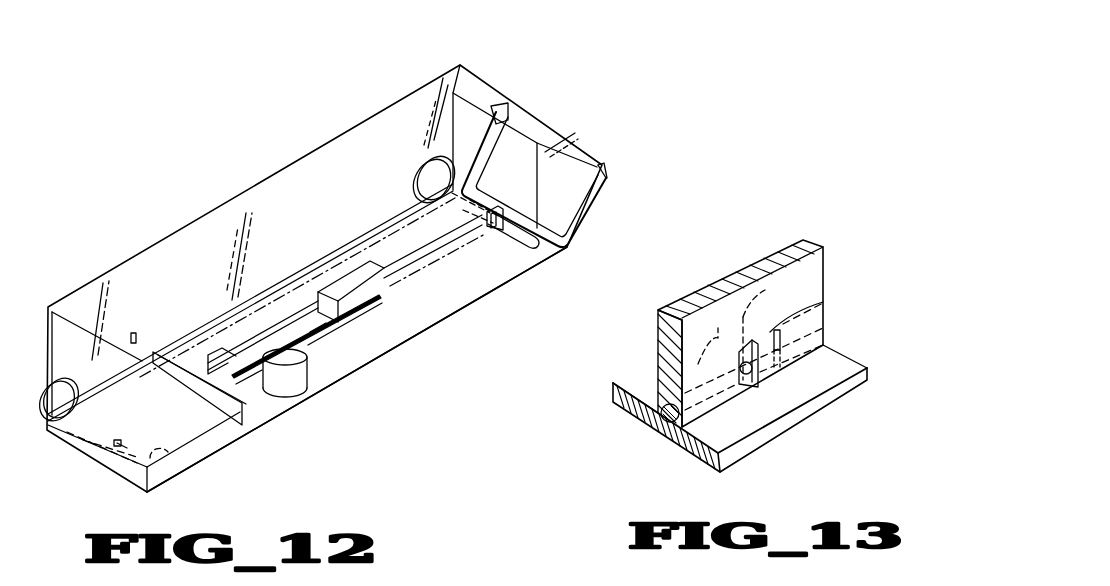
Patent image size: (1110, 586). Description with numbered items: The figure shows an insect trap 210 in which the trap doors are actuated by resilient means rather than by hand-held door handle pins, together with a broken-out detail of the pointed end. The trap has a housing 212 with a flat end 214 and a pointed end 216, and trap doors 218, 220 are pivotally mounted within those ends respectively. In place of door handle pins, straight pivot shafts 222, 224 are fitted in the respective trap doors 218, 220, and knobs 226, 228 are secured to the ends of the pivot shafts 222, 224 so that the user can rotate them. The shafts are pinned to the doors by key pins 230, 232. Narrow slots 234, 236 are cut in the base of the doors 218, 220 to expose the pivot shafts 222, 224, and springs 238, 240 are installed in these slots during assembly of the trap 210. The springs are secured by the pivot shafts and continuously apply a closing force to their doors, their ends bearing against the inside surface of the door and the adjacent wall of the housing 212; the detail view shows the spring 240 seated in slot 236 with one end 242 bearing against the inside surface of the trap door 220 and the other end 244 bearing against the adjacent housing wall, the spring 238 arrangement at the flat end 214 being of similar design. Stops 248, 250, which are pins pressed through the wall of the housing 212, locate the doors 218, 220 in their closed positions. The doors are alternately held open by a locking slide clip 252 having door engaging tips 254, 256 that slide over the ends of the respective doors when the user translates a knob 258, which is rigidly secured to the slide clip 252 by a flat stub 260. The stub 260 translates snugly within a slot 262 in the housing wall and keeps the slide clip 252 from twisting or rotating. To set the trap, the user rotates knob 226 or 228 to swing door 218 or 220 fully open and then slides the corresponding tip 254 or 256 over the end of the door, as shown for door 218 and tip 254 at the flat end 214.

In FIG. 12, the insect trap 210 is at (282, 167).
In FIG. 12, the housing 212 is at (238, 192).
In FIG. 13, the housing 212 is at (697, 460).
In FIG. 12, the flat end 214 is at (53, 298).
In FIG. 12, the pointed end 216 is at (593, 140).
In FIG. 12, the trap door 218 is at (210, 437).
In FIG. 12, the trap door 220 is at (520, 140).
In FIG. 13, the trap door 220 is at (822, 267).
In FIG. 12, the pivot shaft 222 is at (190, 457).
In FIG. 12, the pivot shaft 224 is at (520, 237).
In FIG. 13, the pivot shaft 224 is at (666, 406).
In FIG. 12, the knob 226 is at (62, 380).
In FIG. 12, the knob 228 is at (428, 172).
In FIG. 12, the key pin 230 is at (143, 437).
In FIG. 12, the key pin 232 is at (503, 230).
In FIG. 13, the key pin 232 is at (823, 306).
In FIG. 12, the narrow slot 234 is at (117, 443).
In FIG. 12, the narrow slot 236 is at (490, 222).
In FIG. 13, the narrow slot 236 is at (757, 352).
In FIG. 12, the spring 238 is at (132, 428).
In FIG. 12, the spring 240 is at (470, 225).
In FIG. 13, the spring 240 is at (747, 382).
In FIG. 13, the spring end 242 is at (765, 330).
In FIG. 13, the spring end 244 is at (715, 339).
In FIG. 12, the stop 248 is at (135, 332).
In FIG. 12, the stop 250 is at (497, 108).
In FIG. 12, the locking slide clip 252 is at (337, 333).
In FIG. 12, the door engaging tip 254 is at (195, 363).
In FIG. 12, the door engaging tip 256 is at (337, 282).
In FIG. 12, the knob 258 is at (293, 392).
In FIG. 12, the flat stub 260 is at (303, 353).
In FIG. 12, the slot 262 is at (315, 332).